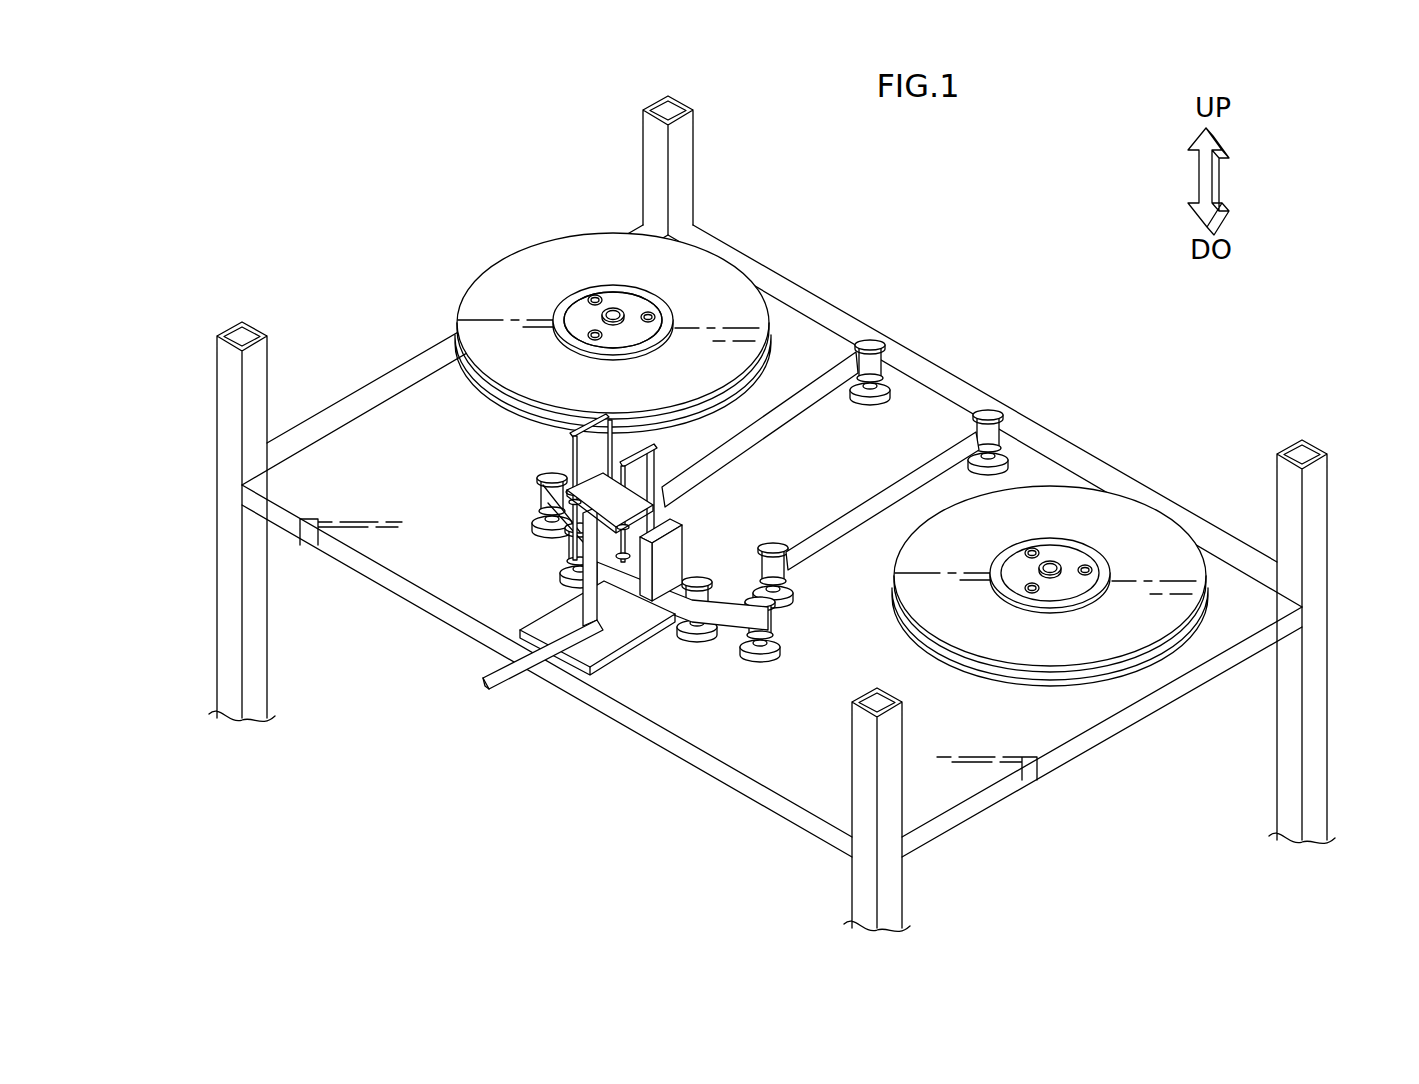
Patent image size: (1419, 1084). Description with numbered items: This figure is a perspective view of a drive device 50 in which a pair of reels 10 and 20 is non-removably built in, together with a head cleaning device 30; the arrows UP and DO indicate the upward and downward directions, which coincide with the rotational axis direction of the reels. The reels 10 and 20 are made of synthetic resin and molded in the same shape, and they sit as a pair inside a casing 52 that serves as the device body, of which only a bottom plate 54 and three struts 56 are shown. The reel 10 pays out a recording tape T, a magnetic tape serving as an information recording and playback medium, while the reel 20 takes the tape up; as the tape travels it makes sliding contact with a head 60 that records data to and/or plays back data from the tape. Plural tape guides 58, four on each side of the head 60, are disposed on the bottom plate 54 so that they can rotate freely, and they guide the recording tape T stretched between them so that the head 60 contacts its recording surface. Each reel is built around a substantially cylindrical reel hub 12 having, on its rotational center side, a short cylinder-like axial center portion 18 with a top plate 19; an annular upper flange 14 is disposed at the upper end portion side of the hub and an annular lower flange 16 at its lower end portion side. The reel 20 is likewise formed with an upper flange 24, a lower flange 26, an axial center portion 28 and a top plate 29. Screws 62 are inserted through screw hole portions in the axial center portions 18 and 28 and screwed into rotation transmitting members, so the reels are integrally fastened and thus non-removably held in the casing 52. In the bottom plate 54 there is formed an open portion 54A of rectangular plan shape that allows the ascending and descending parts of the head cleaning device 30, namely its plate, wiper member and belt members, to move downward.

The reel 10 is at (498, 252).
The reel hub 12 is at (584, 290).
The upper flange 14 is at (485, 302).
The lower flange 16 is at (470, 384).
The axial center portion 18 is at (638, 302).
The top plate 19 is at (590, 328).
The reel 20 is at (1163, 506).
The upper flange 24 is at (1173, 552).
The lower flange 26 is at (1142, 660).
The axial center portion 28 is at (1062, 591).
The top plate 29 is at (1068, 553).
The head cleaning device 30 is at (563, 460).
The drive device 50 is at (355, 283).
The casing 52 is at (388, 594).
The bottom plate 54 is at (743, 745).
The open portion 54A is at (608, 644).
The strut 56 is at (652, 167).
The tape guide 58 is at (870, 344).
The head 60 is at (671, 526).
The screw 62 is at (653, 313).
The recording tape T is at (820, 327).